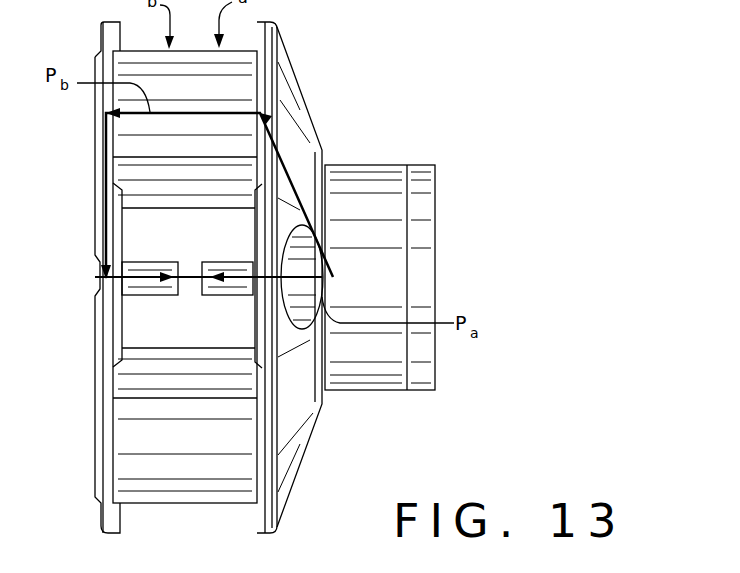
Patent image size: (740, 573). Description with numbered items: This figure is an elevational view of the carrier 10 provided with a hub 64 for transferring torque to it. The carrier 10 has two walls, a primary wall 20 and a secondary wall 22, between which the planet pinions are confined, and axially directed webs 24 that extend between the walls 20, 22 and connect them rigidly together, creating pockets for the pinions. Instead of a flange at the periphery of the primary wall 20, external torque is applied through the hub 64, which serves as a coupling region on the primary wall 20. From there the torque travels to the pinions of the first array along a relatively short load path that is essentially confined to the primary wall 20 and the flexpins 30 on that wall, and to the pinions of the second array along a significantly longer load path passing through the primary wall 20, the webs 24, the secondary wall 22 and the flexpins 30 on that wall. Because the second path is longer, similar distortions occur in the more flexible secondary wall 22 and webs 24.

The carrier 10 is at (325, 47).
The primary wall 20 is at (298, 113).
The secondary wall 22 is at (103, 184).
The webs 24 is at (231, 497).
The flexpins 30 is at (138, 287).
The hub 64 is at (375, 178).